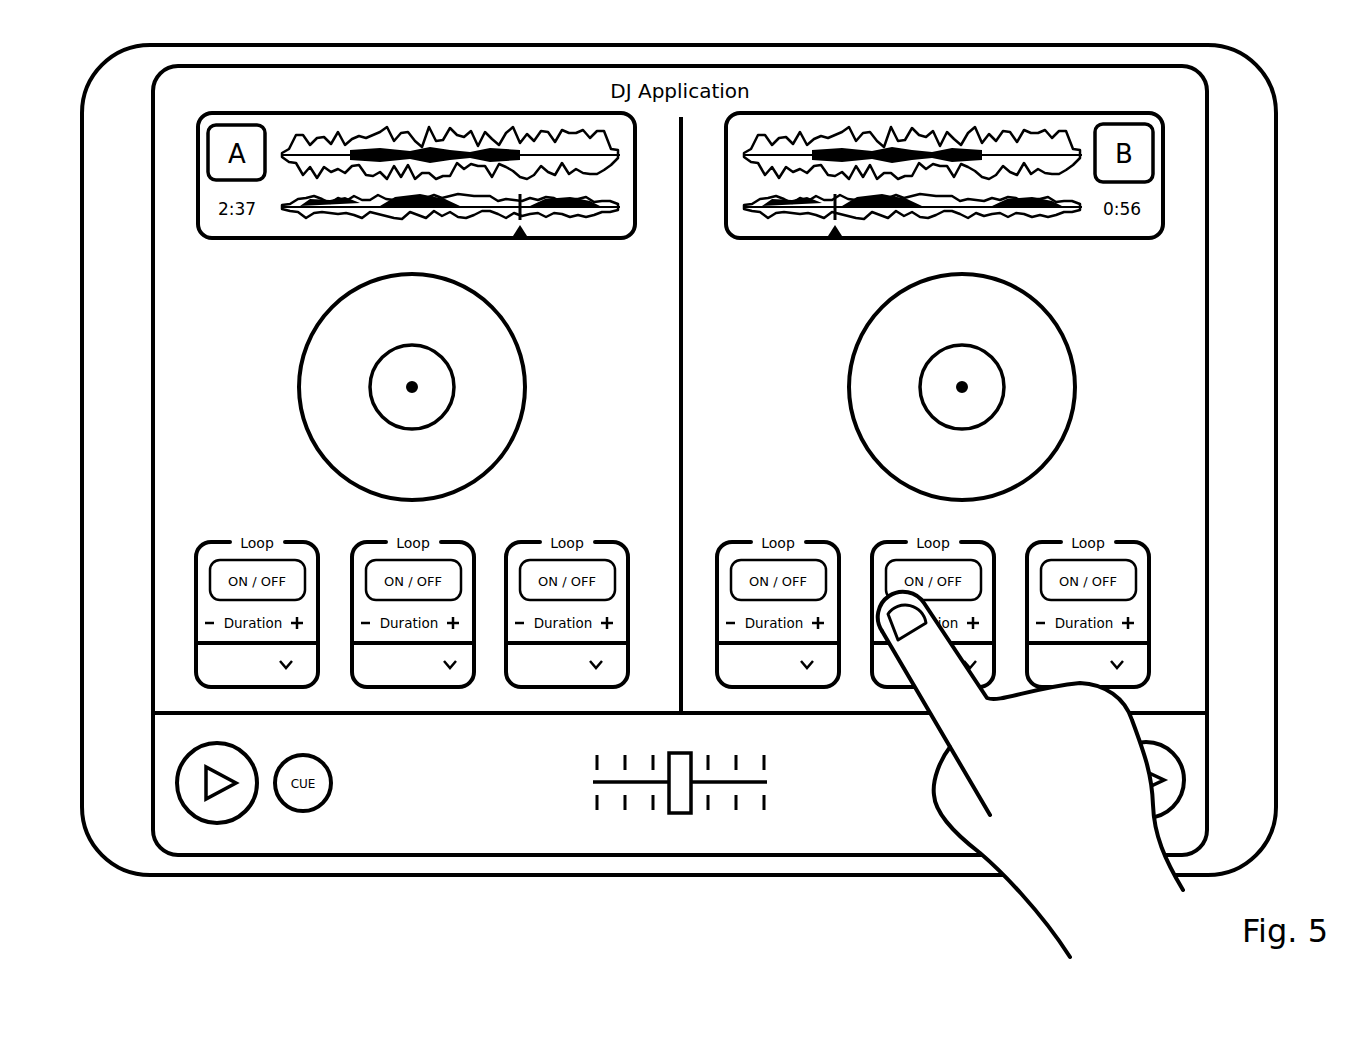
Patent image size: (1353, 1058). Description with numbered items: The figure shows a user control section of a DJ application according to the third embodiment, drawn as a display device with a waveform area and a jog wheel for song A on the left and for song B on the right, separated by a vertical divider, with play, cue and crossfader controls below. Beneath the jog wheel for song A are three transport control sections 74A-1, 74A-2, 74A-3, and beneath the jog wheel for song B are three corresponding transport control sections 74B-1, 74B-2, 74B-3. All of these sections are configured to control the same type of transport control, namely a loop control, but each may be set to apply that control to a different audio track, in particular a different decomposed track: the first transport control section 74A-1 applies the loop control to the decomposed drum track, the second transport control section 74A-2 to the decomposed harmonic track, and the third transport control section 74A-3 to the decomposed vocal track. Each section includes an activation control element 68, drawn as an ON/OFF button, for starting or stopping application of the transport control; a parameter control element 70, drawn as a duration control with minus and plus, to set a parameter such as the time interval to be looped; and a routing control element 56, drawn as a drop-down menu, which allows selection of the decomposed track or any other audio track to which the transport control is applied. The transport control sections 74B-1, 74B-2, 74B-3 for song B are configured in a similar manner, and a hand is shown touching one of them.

The routing control element 56 is at (205, 660).
The activation control element 68 is at (212, 580).
The parameter control element 70 is at (206, 628).
The first transport control section 74A-1 is at (213, 598).
The second transport control section 74A-2 is at (367, 549).
The third transport control section 74A-3 is at (523, 547).
The transport control section 74B-1 is at (735, 547).
The transport control section 74B-2 is at (890, 549).
The transport control section 74B-3 is at (1048, 547).